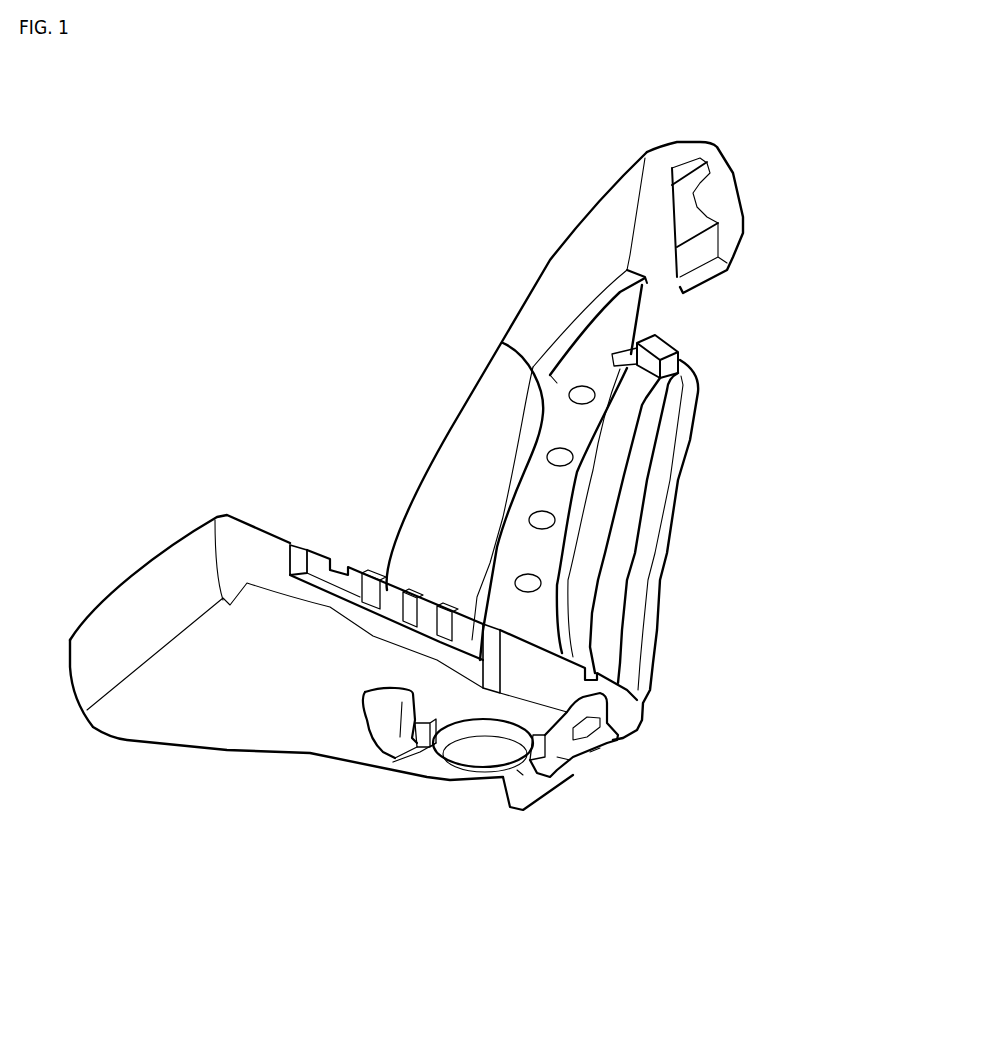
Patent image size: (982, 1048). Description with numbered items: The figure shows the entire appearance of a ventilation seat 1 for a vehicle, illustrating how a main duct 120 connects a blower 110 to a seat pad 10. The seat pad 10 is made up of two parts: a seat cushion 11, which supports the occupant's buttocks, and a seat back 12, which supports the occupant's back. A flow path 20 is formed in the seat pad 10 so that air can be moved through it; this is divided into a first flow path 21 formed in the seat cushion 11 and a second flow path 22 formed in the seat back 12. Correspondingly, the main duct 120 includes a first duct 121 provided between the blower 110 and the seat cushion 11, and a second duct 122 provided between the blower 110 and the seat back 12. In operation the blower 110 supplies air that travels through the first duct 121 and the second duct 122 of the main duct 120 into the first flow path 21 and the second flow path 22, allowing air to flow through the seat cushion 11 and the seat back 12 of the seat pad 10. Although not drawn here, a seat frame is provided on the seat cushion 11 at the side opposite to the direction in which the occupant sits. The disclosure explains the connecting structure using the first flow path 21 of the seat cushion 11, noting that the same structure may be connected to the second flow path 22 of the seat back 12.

The ventilation seat 1 is at (512, 202).
The seat pad 10 is at (457, 460).
The seat cushion 11 is at (147, 592).
The seat back 12 is at (628, 187).
The flow path 20 is at (581, 575).
The first flow path 21 is at (292, 556).
The second flow path 22 is at (543, 518).
The blower 110 is at (460, 760).
The main duct 120 is at (618, 619).
The first duct 121 is at (390, 737).
The second duct 122 is at (664, 532).